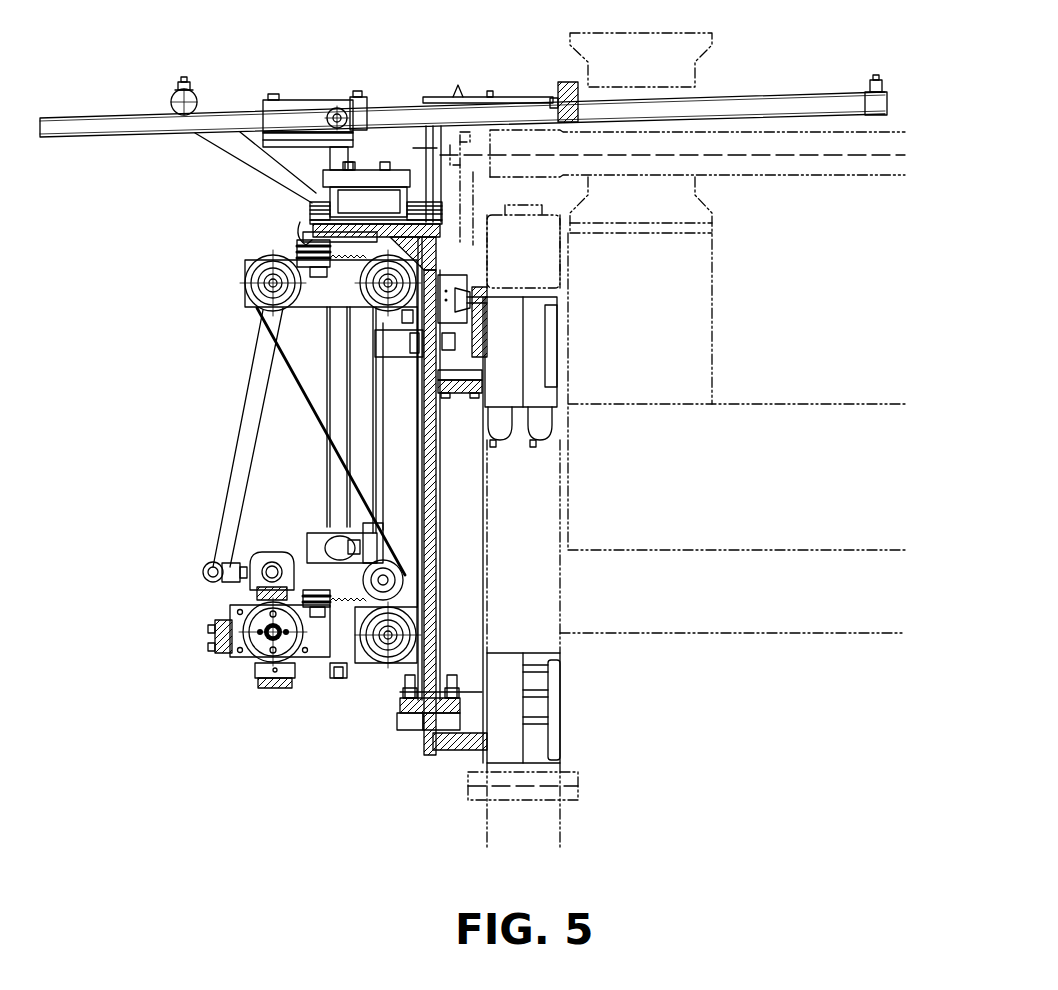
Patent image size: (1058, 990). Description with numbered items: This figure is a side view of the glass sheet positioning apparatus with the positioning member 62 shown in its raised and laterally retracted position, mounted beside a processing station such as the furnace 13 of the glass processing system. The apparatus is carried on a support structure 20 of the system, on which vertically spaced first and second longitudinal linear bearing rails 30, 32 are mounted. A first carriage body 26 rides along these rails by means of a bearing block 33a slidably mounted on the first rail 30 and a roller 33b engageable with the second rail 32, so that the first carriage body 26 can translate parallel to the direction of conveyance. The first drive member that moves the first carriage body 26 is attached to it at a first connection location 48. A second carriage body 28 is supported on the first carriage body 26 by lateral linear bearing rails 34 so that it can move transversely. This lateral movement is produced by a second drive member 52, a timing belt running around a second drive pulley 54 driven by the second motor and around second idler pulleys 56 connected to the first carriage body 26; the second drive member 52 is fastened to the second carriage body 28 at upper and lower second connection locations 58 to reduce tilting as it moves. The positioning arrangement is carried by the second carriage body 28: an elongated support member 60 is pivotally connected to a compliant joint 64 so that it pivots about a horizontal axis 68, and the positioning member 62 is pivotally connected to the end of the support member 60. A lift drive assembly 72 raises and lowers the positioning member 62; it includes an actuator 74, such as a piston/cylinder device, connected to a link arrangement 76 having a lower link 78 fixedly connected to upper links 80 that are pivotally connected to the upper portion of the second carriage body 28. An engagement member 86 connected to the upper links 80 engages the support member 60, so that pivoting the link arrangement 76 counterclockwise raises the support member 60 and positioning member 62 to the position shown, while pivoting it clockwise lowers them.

The furnace 13 is at (745, 278).
The support structure 20 is at (585, 845).
The first carriage body 26 is at (419, 712).
The second carriage body 28 is at (368, 168).
The first longitudinal linear bearing rail 30 is at (490, 266).
The second longitudinal linear bearing rail 32 is at (462, 752).
The bearing block 33a is at (457, 275).
The roller 33b is at (460, 721).
The lateral linear bearing rail 34 is at (312, 197).
The first connection location 48 is at (482, 374).
The second drive member 52 is at (258, 329).
The second drive pulley 54 is at (258, 650).
The second idler pulley 56 is at (250, 296).
The second connection location 58 is at (288, 242).
The support member 60 is at (108, 114).
The positioning member 62 is at (865, 114).
The compliant joint 64 is at (318, 99).
The horizontal axis 68 is at (340, 112).
The lift drive assembly 72 is at (186, 583).
The actuator 74 is at (262, 545).
The link arrangement 76 is at (222, 458).
The lower link 78 is at (246, 414).
The upper link 80 is at (232, 167).
The engagement member 86 is at (172, 92).